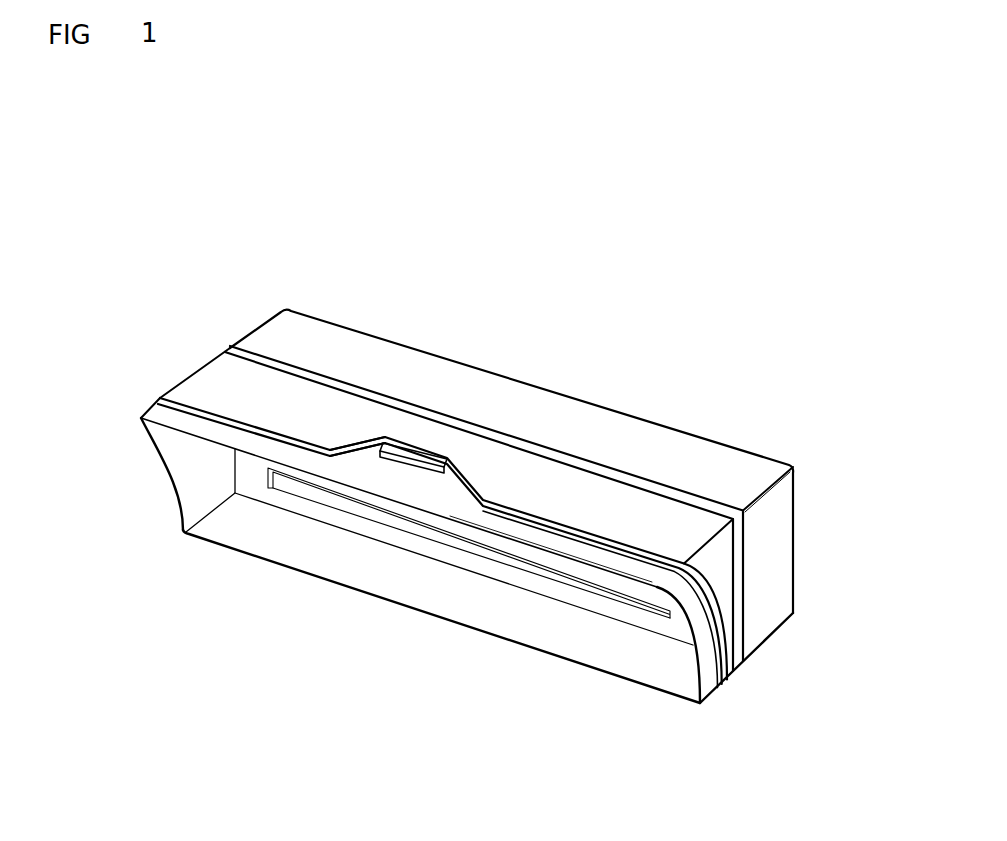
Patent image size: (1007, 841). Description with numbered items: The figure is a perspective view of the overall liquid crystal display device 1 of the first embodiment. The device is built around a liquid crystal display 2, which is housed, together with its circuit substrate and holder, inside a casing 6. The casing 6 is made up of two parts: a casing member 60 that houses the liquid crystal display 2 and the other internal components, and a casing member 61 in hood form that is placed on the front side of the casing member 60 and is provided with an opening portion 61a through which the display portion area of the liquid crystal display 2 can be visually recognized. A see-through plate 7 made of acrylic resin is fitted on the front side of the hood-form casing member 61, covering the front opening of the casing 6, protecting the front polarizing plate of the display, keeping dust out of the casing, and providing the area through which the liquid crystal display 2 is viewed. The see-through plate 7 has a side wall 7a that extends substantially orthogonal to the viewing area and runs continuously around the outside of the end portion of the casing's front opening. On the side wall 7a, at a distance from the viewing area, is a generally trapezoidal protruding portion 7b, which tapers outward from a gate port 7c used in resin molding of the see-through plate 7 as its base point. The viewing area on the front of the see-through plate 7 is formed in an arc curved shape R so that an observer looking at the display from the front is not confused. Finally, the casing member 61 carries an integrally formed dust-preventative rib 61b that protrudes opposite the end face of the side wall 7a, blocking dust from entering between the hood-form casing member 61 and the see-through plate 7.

The liquid crystal display device 1 is at (345, 620).
The liquid crystal display 2 is at (460, 537).
The casing 6 is at (230, 255).
The casing member 60 is at (280, 333).
The casing member in hood form 61 is at (228, 391).
The opening portion 61a is at (325, 499).
The dust-preventative rib 61b is at (157, 398).
The see-through plate 7 is at (523, 642).
The side wall 7a is at (208, 428).
The protruding portion 7b is at (357, 458).
The gate port 7c is at (412, 457).
The arc curved shape R is at (168, 476).